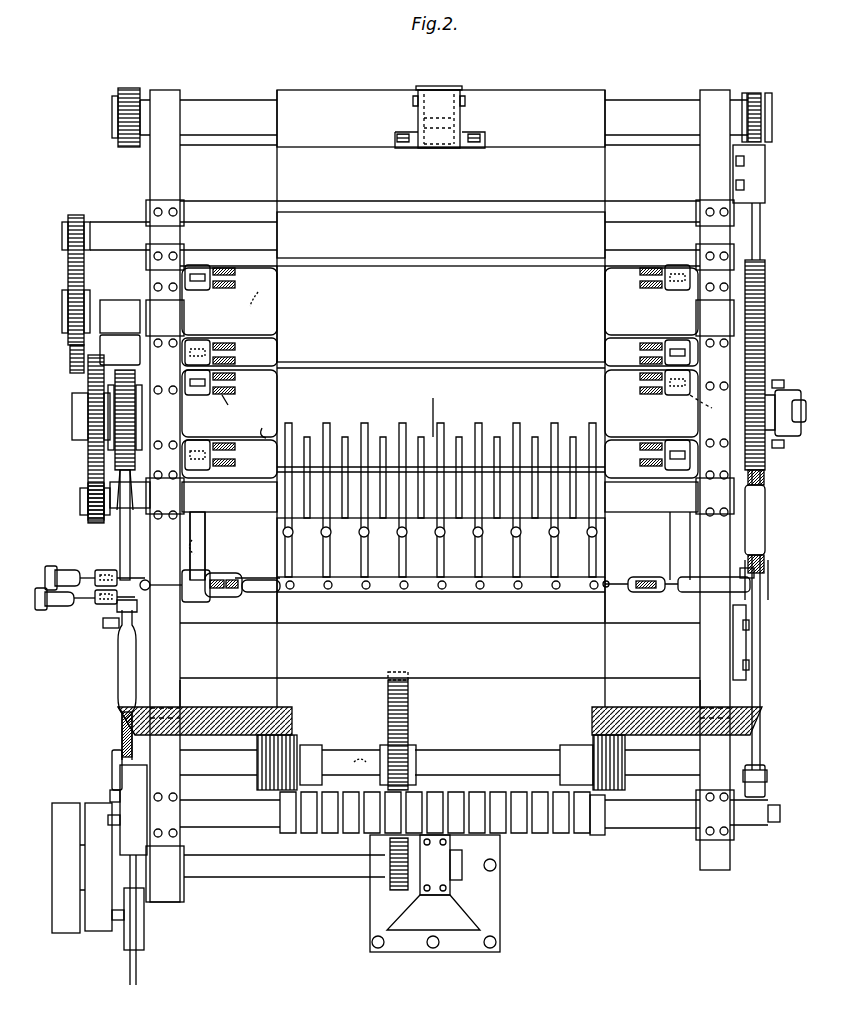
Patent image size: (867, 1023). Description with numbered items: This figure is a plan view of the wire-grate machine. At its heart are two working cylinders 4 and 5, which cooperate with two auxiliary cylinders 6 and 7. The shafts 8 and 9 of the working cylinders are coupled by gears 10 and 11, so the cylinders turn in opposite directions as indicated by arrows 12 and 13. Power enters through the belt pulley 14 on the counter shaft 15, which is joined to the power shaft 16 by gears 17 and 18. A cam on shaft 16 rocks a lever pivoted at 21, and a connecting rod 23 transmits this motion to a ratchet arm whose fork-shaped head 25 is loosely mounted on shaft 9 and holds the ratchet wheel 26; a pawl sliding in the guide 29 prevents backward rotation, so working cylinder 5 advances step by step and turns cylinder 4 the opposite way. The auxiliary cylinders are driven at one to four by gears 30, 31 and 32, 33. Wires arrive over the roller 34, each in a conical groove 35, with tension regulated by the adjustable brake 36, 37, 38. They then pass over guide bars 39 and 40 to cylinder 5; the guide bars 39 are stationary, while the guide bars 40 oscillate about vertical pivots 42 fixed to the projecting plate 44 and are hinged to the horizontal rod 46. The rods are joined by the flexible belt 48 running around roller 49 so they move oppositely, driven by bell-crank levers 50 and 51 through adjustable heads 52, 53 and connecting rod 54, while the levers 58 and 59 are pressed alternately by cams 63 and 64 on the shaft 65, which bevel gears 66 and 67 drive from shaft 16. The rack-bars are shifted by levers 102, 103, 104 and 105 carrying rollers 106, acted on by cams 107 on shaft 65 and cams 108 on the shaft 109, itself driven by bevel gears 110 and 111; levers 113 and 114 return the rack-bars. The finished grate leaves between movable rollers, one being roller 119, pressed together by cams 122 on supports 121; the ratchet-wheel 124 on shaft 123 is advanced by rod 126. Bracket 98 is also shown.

The working cylinder 4 is at (441, 317).
The working cylinder 5 is at (441, 480).
The auxiliary cylinder 6 is at (395, 235).
The auxiliary cylinder 7 is at (354, 432).
The shaft 8 is at (272, 350).
The shaft 9 is at (270, 394).
The gear 10 is at (765, 270).
The gear 11 is at (765, 468).
The arrow 12 is at (262, 432).
The arrow 13 is at (265, 302).
The belt pulley 14 is at (100, 930).
The counter shaft 15 is at (284, 880).
The power shaft 16 is at (462, 762).
The gear 17 is at (388, 888).
The gear 18 is at (408, 707).
The pivot 21 is at (112, 768).
The connecting rod 23 is at (118, 670).
The fork-shaped head 25 is at (130, 495).
The ratchet wheel 26 is at (125, 412).
The guide 29 is at (110, 350).
The gear 30 is at (70, 358).
The gear 31 is at (78, 215).
The gear 32 is at (88, 465).
The gear 33 is at (90, 520).
The roller 34 is at (585, 836).
The conical groove 35 is at (520, 834).
The adjustable brake 36 is at (120, 795).
The adjustable brake 37 is at (138, 970).
The adjustable brake 38 is at (144, 926).
The guide bar 39 is at (497, 437).
The guide bar 40 is at (478, 423).
The vertical pivot 42 is at (445, 535).
The projecting plate 44 is at (433, 410).
The horizontal rod 46 is at (465, 592).
The flexible belt or steel ribbon 48 is at (755, 580).
The roller 49 is at (718, 618).
The bell-crank lever 50 is at (60, 606).
The bell-crank lever 51 is at (70, 570).
The adjustable head 52 is at (103, 622).
The adjustable head 53 is at (96, 570).
The adjustable connecting rod 54 is at (165, 602).
The lever 58 is at (268, 595).
The lever 59 is at (256, 576).
The cam 63 is at (218, 598).
The cam 64 is at (184, 580).
The shaft 65 is at (205, 525).
The bevel gear 66 is at (266, 707).
The bevel gear 67 is at (292, 738).
The link 98 is at (711, 408).
The lever 102 is at (230, 343).
The lever 103 is at (232, 408).
The lever 104 is at (648, 345).
The lever 105 is at (648, 373).
The roller 106 is at (240, 380).
The cam 107 is at (198, 340).
The cam 108 is at (678, 349).
The shaft 109 is at (672, 575).
The bevel gear 110 is at (630, 710).
The bevel gear 111 is at (590, 736).
The lever 113 is at (226, 270).
The lever 114 is at (233, 462).
The movable roller 119 is at (530, 100).
The support 121 is at (410, 106).
The cam 122 is at (455, 86).
The shaft 123 is at (772, 110).
The ratchet-wheel 124 is at (755, 92).
The rod 126 is at (760, 234).